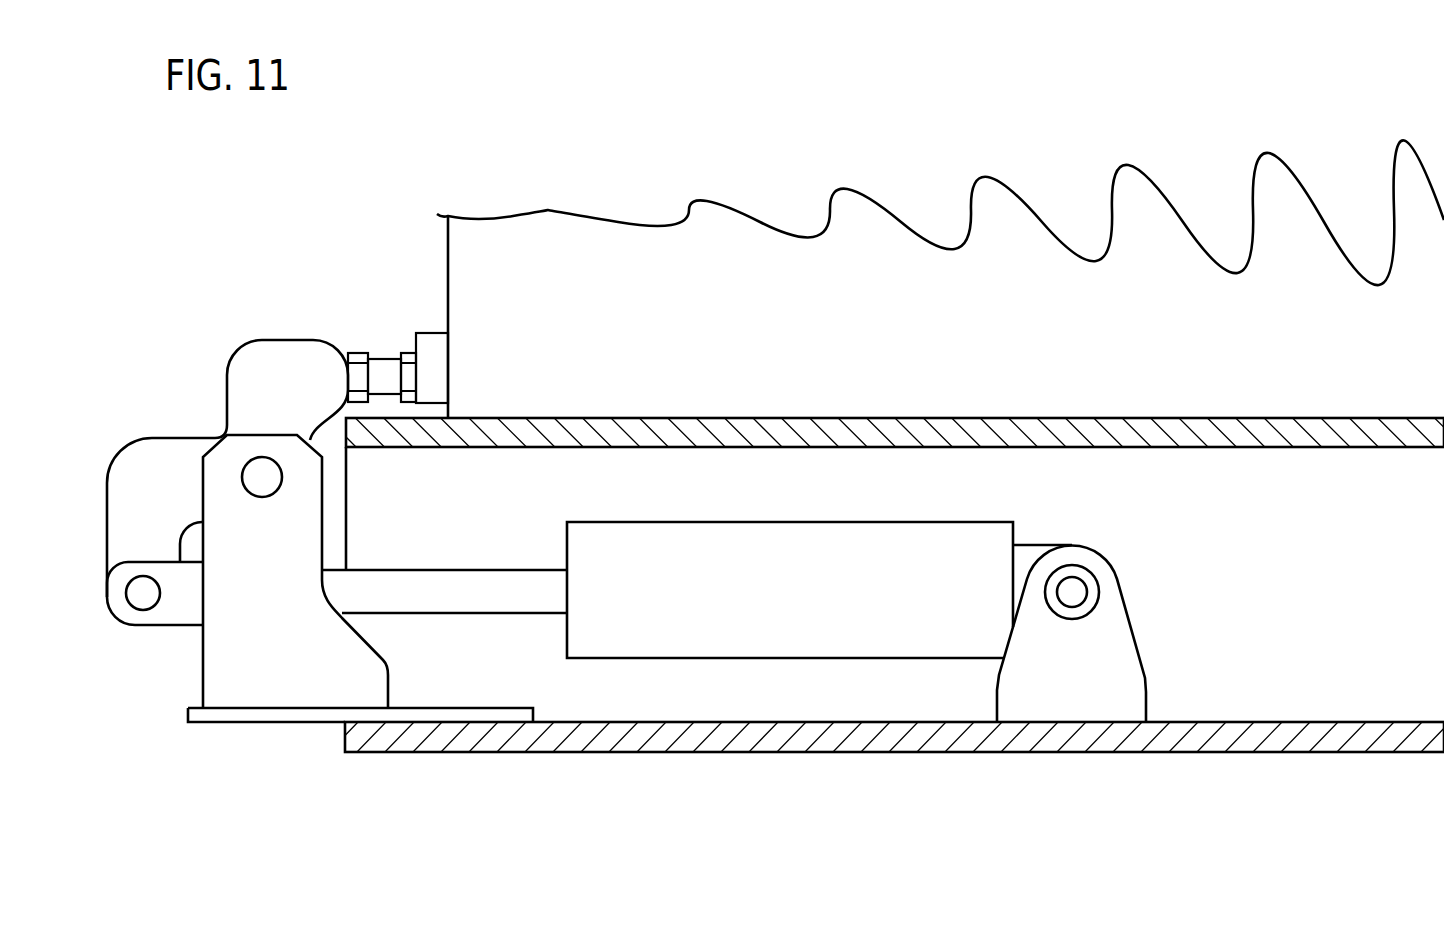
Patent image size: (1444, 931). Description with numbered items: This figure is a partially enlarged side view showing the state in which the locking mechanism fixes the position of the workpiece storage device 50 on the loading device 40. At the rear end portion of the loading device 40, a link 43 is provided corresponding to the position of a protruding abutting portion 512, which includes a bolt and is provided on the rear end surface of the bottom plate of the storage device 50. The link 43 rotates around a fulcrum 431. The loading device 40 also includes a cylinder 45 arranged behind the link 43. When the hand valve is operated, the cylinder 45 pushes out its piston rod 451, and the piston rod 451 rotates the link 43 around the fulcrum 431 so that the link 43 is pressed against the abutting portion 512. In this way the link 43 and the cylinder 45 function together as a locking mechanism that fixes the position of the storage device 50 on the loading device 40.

The loading device 40 is at (387, 753).
The link 43 is at (275, 350).
The fulcrum 431 is at (262, 465).
The cylinder 45 is at (738, 628).
The piston rod 451 is at (398, 583).
The storage device 50 is at (448, 252).
The abutting portion 512 is at (363, 352).